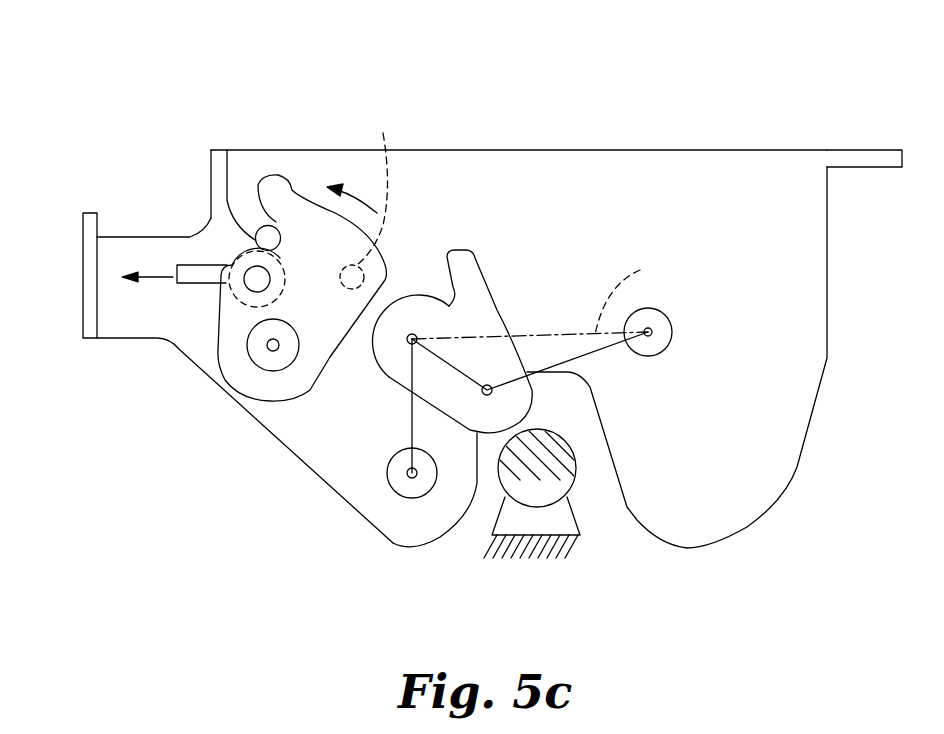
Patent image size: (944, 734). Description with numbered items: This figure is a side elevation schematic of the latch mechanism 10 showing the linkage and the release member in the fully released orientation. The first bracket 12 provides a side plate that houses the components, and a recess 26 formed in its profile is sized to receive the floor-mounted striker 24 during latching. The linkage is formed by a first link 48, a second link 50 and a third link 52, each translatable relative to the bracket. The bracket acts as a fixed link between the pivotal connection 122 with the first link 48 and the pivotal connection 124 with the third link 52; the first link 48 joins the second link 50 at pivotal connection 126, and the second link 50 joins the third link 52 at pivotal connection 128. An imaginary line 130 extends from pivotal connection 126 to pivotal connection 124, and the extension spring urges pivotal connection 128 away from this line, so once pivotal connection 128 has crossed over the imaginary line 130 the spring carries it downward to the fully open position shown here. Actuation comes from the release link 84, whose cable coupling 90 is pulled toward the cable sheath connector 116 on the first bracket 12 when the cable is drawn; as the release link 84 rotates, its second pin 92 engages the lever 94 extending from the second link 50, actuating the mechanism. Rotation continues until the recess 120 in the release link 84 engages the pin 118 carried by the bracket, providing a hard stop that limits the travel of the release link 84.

The latch mechanism 10 is at (597, 96).
The first bracket 12 is at (857, 150).
The striker 24 is at (498, 492).
The recess 26 is at (616, 478).
The first link 48 is at (410, 418).
The second link 50 is at (386, 383).
The third link 52 is at (585, 357).
The release link 84 is at (261, 401).
The cable coupling 90 is at (203, 263).
The second pin 92 is at (361, 195).
The lever 94 is at (460, 248).
The cable sheath connector 116 is at (92, 213).
The pin 118 is at (222, 162).
The recess 120 is at (268, 224).
The pivotal connection 122 is at (393, 540).
The pivotal connection 124 is at (673, 332).
The pivotal connection 126 is at (412, 334).
The pivotal connection 128 is at (555, 424).
The imaginary line 130 is at (642, 295).